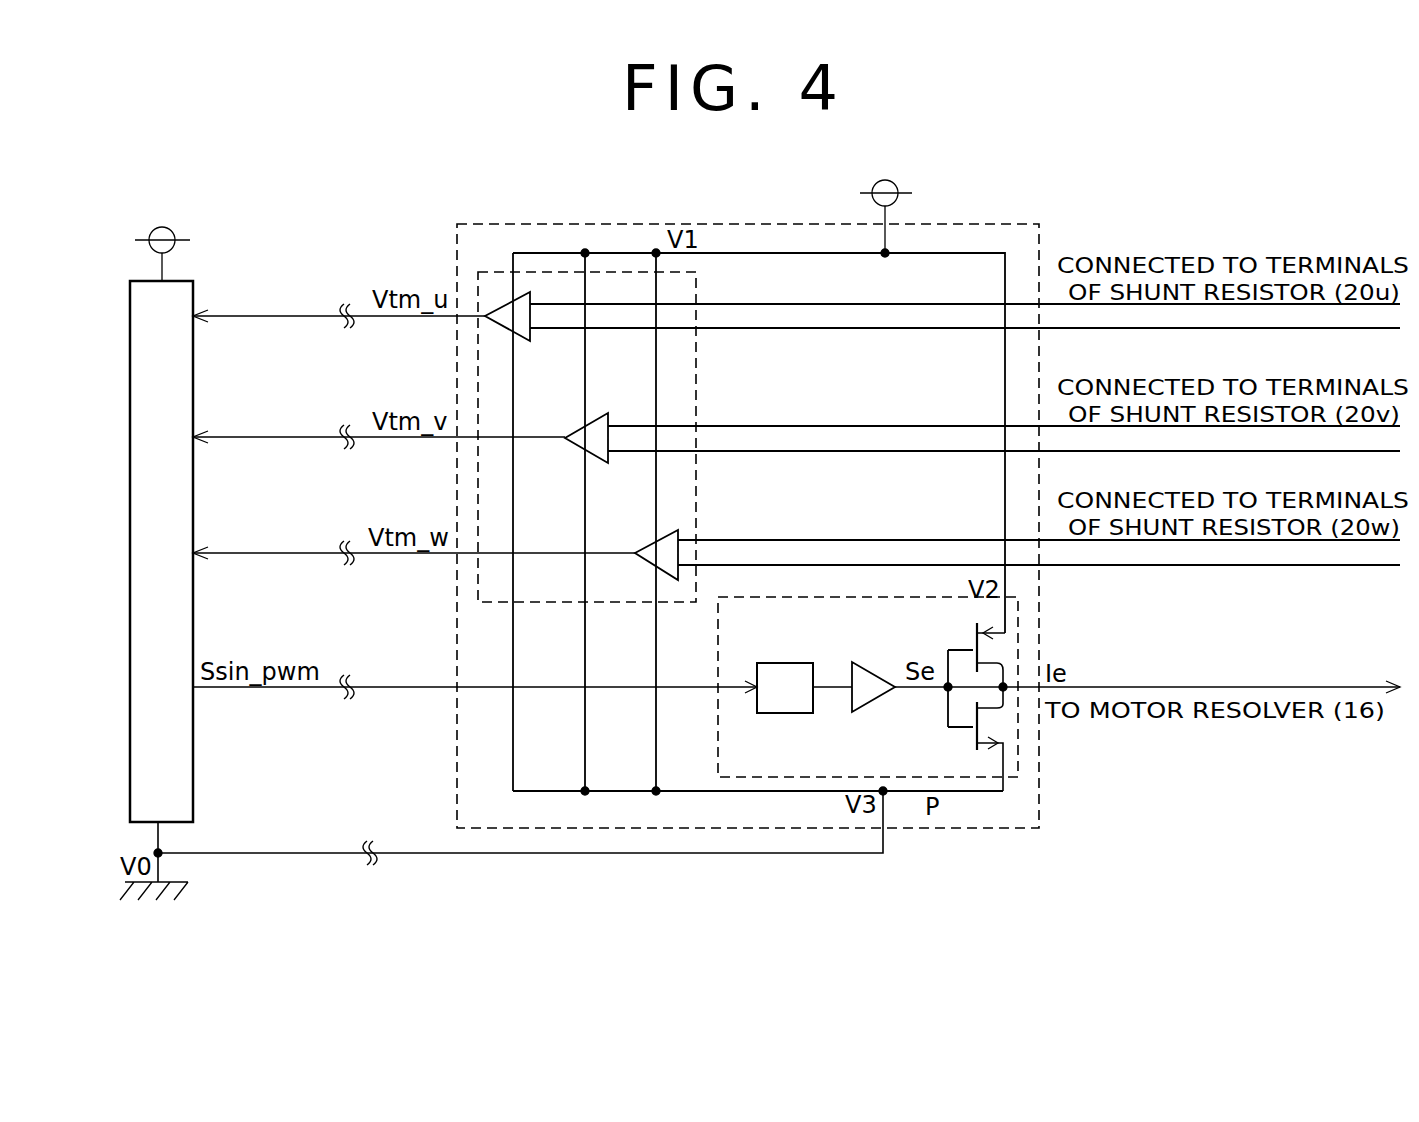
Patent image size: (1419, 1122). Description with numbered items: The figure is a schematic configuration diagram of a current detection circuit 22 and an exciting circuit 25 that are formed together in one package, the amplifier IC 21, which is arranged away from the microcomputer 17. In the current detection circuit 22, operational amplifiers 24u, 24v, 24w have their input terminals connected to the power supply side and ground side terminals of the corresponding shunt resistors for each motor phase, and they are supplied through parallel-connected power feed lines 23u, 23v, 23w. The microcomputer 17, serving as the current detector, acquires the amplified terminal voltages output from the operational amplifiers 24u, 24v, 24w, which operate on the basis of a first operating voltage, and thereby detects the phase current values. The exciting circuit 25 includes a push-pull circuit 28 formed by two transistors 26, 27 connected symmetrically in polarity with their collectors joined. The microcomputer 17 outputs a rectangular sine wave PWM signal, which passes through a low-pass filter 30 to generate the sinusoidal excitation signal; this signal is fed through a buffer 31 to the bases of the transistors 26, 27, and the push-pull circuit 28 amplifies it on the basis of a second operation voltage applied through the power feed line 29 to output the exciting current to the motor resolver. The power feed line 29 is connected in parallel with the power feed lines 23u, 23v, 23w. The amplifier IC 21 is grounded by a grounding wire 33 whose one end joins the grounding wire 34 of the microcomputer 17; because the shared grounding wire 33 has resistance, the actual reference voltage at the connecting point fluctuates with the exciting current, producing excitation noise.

The microcomputer 17 is at (197, 286).
The amplifier IC 21 is at (1040, 240).
The current detection circuit 22 is at (698, 350).
The power feed line 23u is at (548, 483).
The power feed line 23v is at (583, 519).
The power feed line 23w is at (653, 593).
The operational amplifier 24u is at (521, 342).
The operational amplifier 24v is at (600, 413).
The operational amplifier 24w is at (643, 547).
The exciting circuit 25 is at (718, 755).
The transistor 26 is at (977, 628).
The transistor 27 is at (977, 746).
The push-pull circuit 28 is at (922, 656).
The power feed line 29 is at (1005, 488).
The low-pass filter 30 is at (790, 663).
The buffer 31 is at (877, 700).
The grounding wire 33 is at (410, 853).
The grounding wire 34 is at (160, 835).